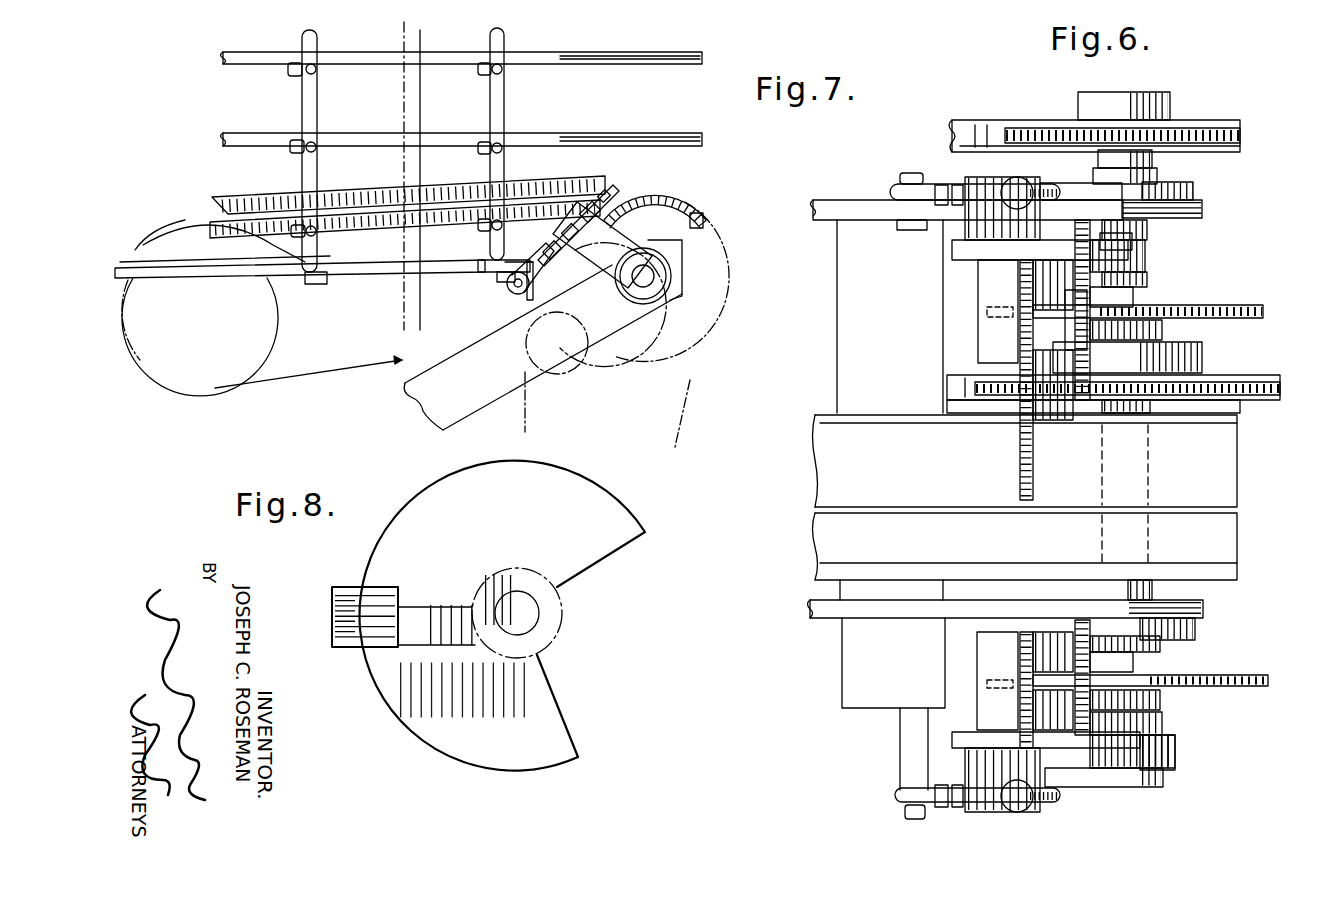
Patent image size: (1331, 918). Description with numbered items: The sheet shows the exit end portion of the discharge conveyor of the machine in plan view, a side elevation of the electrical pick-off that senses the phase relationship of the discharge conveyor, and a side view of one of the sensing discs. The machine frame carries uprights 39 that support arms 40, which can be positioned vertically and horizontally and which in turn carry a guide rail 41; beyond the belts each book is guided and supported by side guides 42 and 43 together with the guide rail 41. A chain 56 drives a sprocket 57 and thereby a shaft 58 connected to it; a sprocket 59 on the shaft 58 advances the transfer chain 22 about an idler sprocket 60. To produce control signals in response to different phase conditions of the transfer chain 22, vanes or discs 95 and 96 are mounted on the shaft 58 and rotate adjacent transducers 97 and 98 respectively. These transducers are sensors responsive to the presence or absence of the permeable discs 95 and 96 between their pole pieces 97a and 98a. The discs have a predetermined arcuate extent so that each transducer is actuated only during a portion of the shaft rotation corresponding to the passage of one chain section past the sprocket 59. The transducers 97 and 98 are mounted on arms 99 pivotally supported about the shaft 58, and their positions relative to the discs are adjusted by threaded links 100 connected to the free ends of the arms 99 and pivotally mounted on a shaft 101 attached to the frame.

In FIG. 7, the transfer chain 22 is at (316, 372).
In FIG. 6, the transfer chain 22 is at (1275, 378).
In FIG. 7, the upright 39 is at (505, 35).
In FIG. 7, the arm 40 is at (295, 72).
In FIG. 7, the guide rail 41 is at (223, 67).
In FIG. 6, the side guide 42 is at (1232, 514).
In FIG. 6, the side guide 43 is at (1230, 425).
In FIG. 7, the chain 56 is at (690, 380).
In FIG. 6, the chain 56 is at (985, 126).
In FIG. 7, the sprocket 57 is at (658, 334).
In FIG. 6, the sprocket 57 is at (1190, 130).
In FIG. 8, the shaft 58 is at (527, 625).
In FIG. 6, the shaft 58 is at (1150, 327).
In FIG. 6, the sprocket 59 is at (1240, 387).
In FIG. 7, the idler sprocket 60 is at (137, 367).
In FIG. 6, the disc 95 is at (1230, 688).
In FIG. 8, the disc 96 is at (436, 746).
In FIG. 6, the disc 96 is at (1265, 308).
In FIG. 6, the transducer 97 is at (982, 700).
In FIG. 6, the pole piece 97a is at (1070, 288).
In FIG. 6, the transducer 98 is at (985, 290).
In FIG. 6, the pole piece 98a is at (1037, 706).
In FIG. 7, the arm 99 is at (637, 204).
In FIG. 7, the threaded link 100 is at (605, 216).
In FIG. 7, the shaft 101 is at (508, 286).